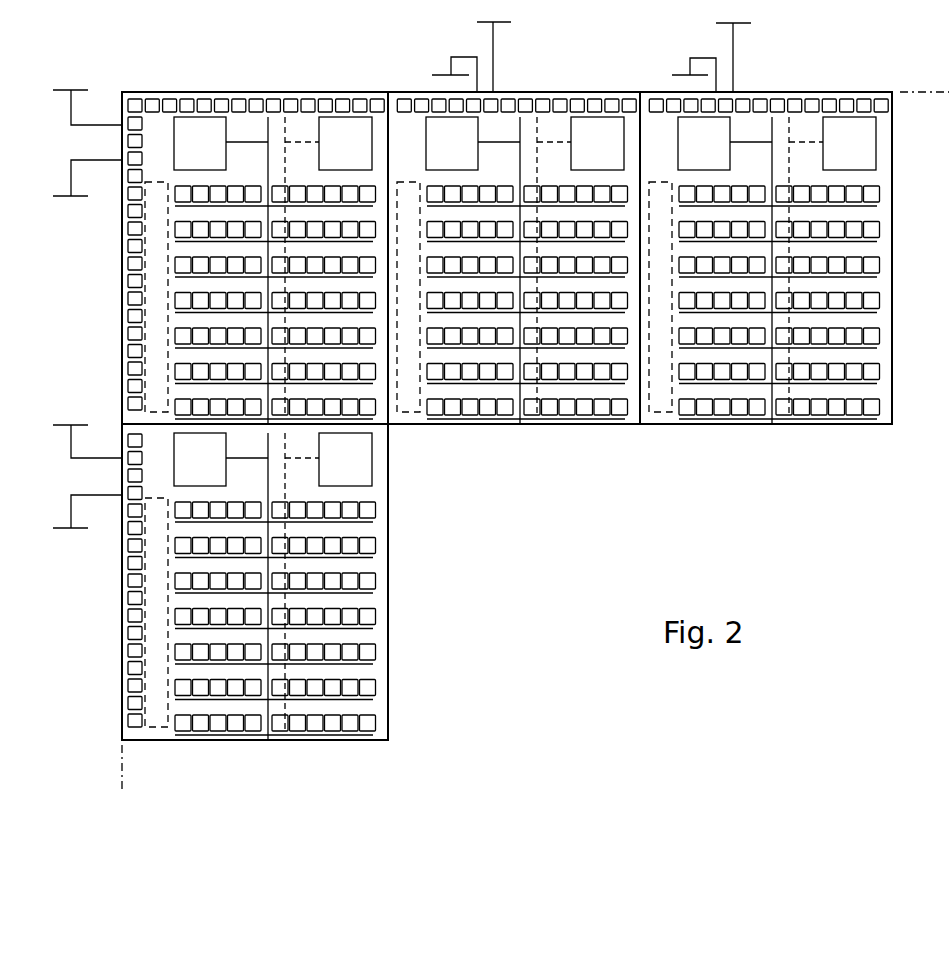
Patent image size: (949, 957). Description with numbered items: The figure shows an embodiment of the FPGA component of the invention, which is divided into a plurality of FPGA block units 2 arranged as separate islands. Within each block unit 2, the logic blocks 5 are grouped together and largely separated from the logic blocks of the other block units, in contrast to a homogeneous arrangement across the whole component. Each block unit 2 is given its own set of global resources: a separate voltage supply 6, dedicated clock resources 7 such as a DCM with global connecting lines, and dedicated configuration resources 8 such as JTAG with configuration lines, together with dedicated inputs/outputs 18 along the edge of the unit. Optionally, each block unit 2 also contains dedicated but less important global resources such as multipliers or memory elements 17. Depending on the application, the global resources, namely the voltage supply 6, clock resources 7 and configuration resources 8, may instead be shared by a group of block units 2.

The FPGA block unit 2 is at (513, 420).
The logic block 5 is at (857, 233).
The voltage supply 6 is at (95, 141).
The clock resource 7 is at (200, 128).
The configuration resource 8 is at (345, 128).
The multiplier/memory element 17 is at (150, 296).
The input/output 18 is at (130, 613).